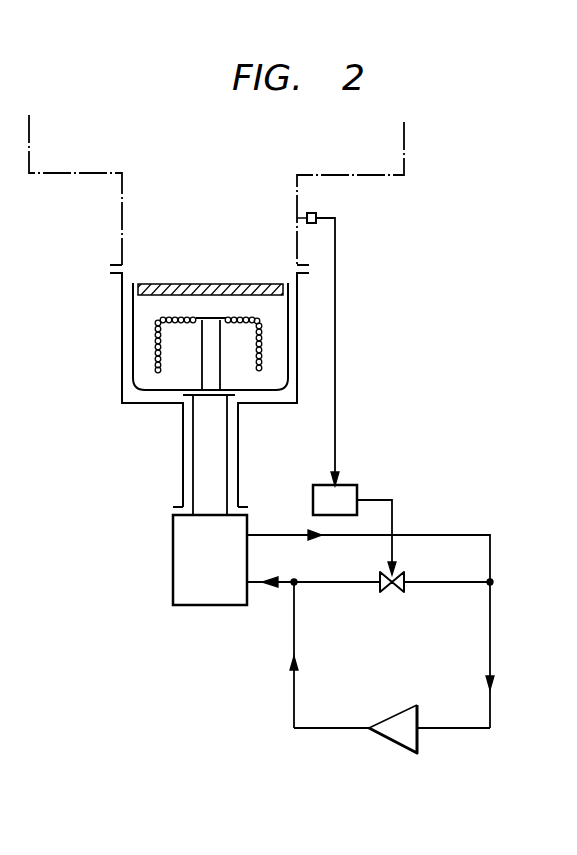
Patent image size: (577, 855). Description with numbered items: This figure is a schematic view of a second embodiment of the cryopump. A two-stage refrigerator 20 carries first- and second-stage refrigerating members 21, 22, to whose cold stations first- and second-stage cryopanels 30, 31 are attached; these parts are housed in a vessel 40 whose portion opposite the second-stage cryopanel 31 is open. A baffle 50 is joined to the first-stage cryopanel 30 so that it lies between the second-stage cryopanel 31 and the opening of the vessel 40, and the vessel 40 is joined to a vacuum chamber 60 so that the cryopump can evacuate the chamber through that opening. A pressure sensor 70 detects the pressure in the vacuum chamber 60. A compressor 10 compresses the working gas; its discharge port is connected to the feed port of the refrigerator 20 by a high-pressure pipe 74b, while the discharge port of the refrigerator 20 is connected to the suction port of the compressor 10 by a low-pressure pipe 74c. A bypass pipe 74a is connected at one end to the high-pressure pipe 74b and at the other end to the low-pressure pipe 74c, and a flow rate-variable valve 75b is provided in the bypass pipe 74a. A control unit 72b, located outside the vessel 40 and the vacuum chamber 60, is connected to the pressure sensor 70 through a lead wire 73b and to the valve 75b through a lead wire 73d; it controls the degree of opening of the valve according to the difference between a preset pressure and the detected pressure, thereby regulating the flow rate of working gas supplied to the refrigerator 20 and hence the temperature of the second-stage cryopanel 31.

The vacuum chamber 60 is at (405, 151).
The pressure sensor 70 is at (319, 215).
The baffle 50 is at (165, 284).
The vessel 40 is at (122, 324).
The second-stage cryopanel 31 is at (157, 337).
The first-stage cryopanel 30 is at (133, 378).
The second-stage refrigerating member 22 is at (202, 352).
The first-stage refrigerating member 21 is at (193, 452).
The refrigerator 20 is at (156, 525).
The lead wire 73b is at (338, 326).
The control unit 72b is at (347, 485).
The lead wire 73d is at (395, 512).
The bypass pipe 74a is at (347, 584).
The control valve 75b is at (393, 594).
The high-pressure pipe 74b is at (294, 642).
The low-pressure pipe 74c is at (493, 650).
The compressor 10 is at (418, 740).